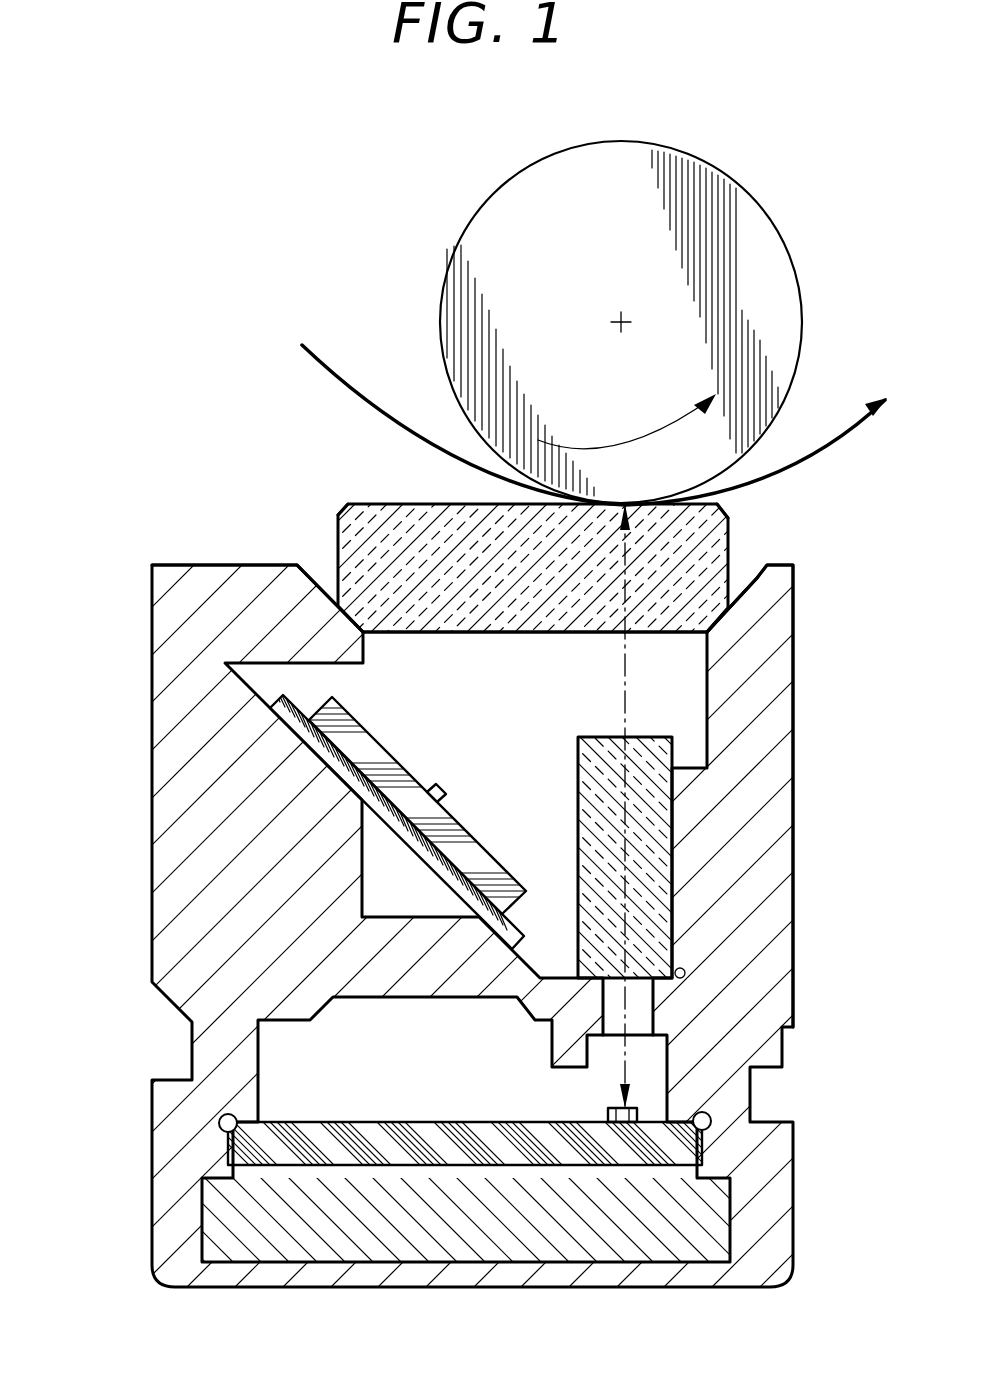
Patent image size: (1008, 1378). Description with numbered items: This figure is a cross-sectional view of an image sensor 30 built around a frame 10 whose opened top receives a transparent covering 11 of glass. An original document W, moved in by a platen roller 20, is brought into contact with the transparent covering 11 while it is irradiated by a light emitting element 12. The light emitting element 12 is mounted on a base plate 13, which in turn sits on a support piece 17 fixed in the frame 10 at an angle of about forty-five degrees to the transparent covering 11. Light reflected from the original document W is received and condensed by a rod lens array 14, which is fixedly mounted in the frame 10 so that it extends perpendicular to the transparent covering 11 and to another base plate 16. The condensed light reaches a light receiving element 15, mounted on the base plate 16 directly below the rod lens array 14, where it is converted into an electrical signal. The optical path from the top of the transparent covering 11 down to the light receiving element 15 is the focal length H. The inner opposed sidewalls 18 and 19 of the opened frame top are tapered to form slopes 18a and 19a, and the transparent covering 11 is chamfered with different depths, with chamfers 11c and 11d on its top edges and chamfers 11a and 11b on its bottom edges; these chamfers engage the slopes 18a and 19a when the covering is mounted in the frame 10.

The frame 10 is at (740, 977).
The transparent covering 11 is at (415, 545).
The chamfer 11a is at (363, 632).
The chamfer 11b is at (713, 622).
The chamfer 11c is at (345, 517).
The chamfer 11d is at (735, 510).
The light emitting element 12 is at (450, 792).
The base plate 13 is at (370, 758).
The rod lens array 14 is at (596, 818).
The light receiving element 15 is at (612, 1110).
The base plate 16 is at (373, 1143).
The support piece 17 is at (303, 737).
The inner sidewall 18 is at (235, 600).
The slope 18a is at (337, 588).
The inner sidewall 19 is at (767, 620).
The slope 19a is at (752, 577).
The platen roller 20 is at (510, 255).
The image sensor 30 is at (471, 689).
The original document W is at (405, 440).
The focal length H is at (625, 678).